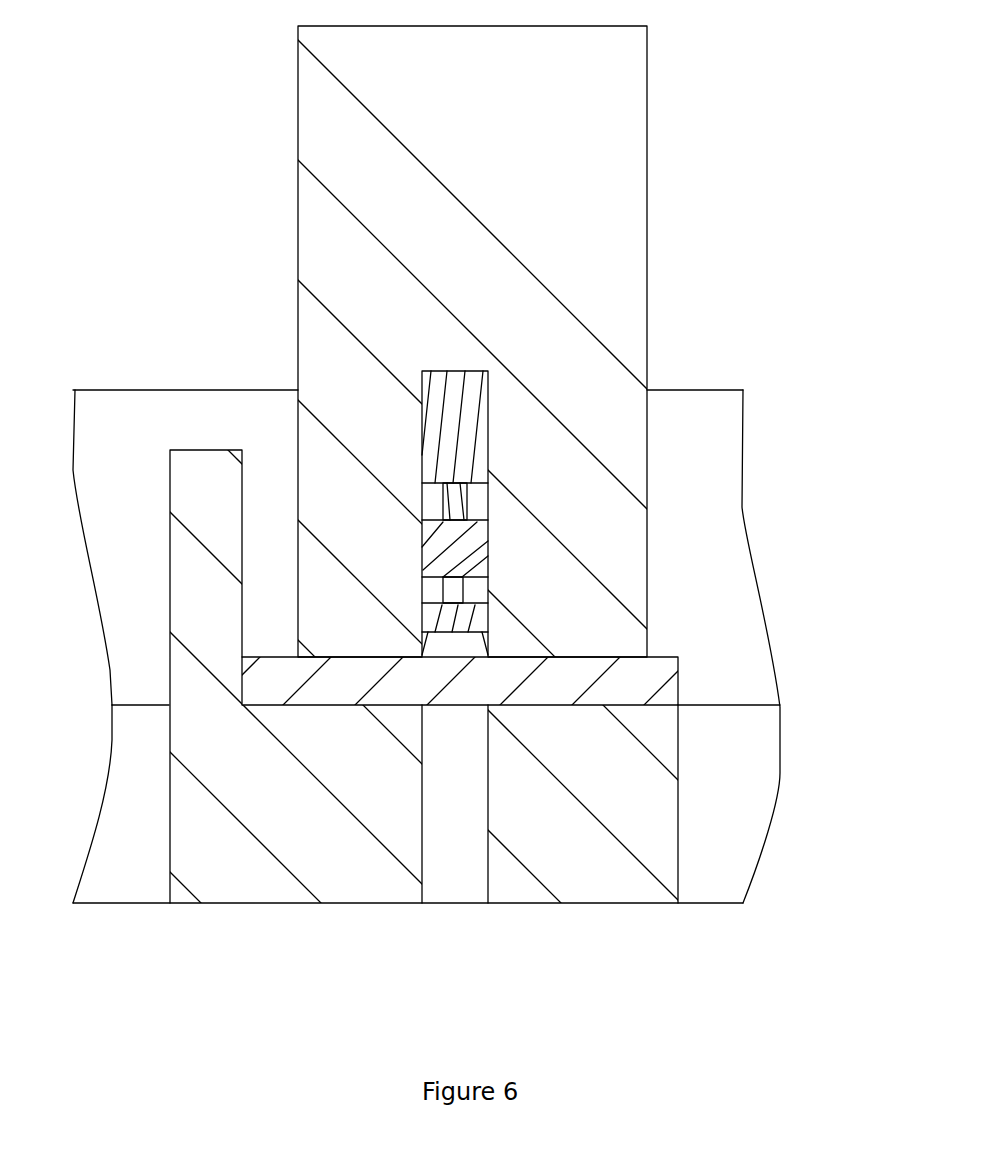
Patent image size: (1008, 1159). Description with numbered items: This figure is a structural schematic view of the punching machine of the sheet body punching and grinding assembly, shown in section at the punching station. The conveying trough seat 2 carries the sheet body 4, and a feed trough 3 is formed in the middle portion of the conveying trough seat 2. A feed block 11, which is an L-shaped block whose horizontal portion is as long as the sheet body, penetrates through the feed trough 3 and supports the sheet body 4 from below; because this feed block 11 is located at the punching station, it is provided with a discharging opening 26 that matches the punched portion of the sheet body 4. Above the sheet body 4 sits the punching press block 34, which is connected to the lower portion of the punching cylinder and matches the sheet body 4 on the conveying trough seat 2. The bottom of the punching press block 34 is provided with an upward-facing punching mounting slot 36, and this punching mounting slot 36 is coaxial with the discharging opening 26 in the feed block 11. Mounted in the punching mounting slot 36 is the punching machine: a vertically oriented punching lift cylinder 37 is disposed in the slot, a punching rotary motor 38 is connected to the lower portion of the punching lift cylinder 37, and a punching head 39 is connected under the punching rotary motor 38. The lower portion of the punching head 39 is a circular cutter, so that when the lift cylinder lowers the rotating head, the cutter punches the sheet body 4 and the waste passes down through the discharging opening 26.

The conveying trough seat 2 is at (137, 453).
The feed trough 3 is at (137, 825).
The sheet body 4 is at (348, 682).
The feed block 11 is at (642, 805).
The discharging opening 26 is at (465, 840).
The punching press block 34 is at (557, 280).
The punching mounting slot 36 is at (428, 493).
The punching lift cylinder 37 is at (467, 450).
The punching rotary motor 38 is at (468, 557).
The punching head 39 is at (477, 627).